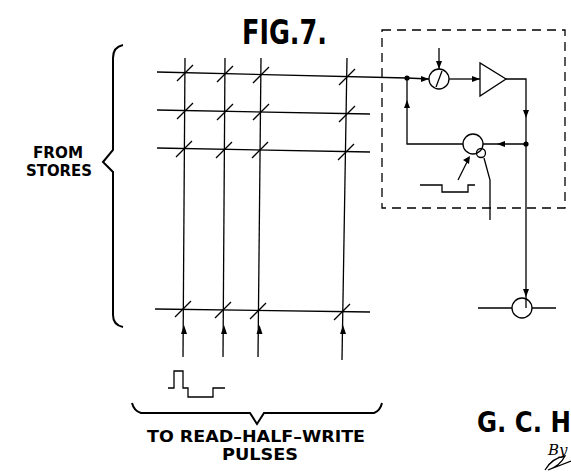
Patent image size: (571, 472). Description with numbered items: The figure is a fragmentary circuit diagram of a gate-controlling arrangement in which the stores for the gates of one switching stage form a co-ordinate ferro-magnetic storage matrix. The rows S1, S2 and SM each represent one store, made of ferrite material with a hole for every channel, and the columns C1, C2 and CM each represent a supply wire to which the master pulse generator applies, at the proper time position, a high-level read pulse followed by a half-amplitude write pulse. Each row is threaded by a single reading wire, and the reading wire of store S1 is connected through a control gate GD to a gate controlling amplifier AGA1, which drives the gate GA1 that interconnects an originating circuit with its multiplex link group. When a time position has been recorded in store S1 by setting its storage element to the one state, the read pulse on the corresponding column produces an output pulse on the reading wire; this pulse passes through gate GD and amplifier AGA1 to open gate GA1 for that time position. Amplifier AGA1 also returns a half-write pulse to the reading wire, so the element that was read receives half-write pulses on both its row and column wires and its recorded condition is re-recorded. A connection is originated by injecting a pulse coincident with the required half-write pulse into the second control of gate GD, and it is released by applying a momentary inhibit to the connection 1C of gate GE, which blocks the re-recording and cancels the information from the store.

The store S1 is at (279, 71).
The store S2 is at (250, 107).
The store SM is at (245, 308).
The column supply wire C1 is at (186, 227).
The column supply wire C2 is at (220, 220).
The column supply wire CM is at (344, 221).
The control gate GD is at (426, 72).
The gate controlling amplifier AGA1 is at (497, 173).
The inhibit gate GE is at (465, 135).
The inhibit connection 1C is at (490, 203).
The gate GA1 is at (517, 320).